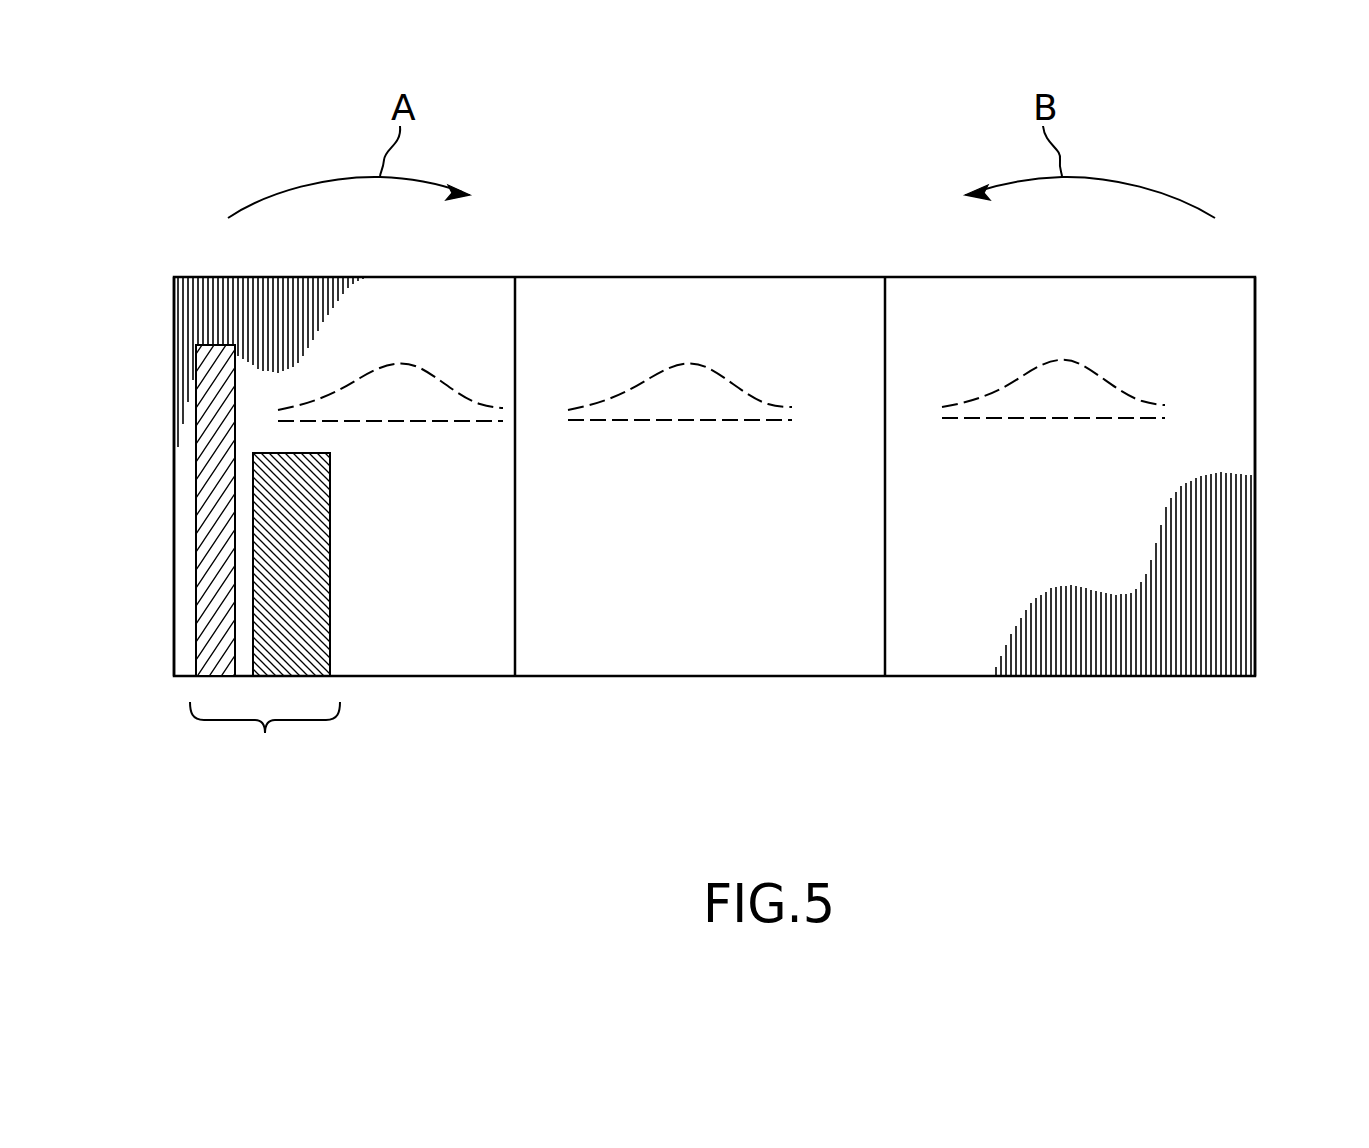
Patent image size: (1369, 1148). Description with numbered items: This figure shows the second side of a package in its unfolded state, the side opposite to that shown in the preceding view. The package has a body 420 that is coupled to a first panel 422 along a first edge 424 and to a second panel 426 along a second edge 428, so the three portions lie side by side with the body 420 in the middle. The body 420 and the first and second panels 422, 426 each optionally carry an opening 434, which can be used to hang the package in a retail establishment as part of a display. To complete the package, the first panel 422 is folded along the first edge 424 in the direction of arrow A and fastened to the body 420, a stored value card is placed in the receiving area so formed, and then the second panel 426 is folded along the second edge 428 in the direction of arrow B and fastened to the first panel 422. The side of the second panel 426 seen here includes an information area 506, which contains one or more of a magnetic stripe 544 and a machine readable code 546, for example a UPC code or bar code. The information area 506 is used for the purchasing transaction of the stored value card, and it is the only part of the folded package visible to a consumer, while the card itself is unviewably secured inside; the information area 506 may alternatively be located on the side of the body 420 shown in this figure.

The body 420 is at (628, 312).
The first panel 422 is at (173, 622).
The first edge 424 is at (515, 546).
The second panel 426 is at (235, 318).
The second edge 428 is at (885, 610).
The opening 434 is at (683, 362).
The information area 506 is at (265, 743).
The magnetic stripe 544 is at (196, 460).
The machine readable code 546 is at (330, 620).